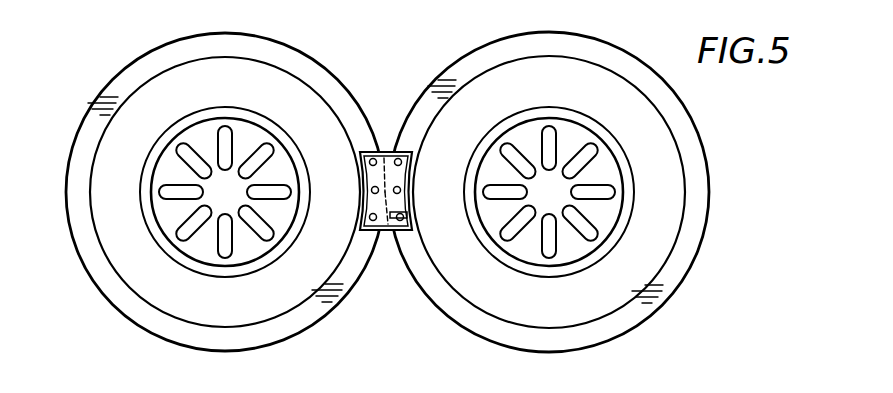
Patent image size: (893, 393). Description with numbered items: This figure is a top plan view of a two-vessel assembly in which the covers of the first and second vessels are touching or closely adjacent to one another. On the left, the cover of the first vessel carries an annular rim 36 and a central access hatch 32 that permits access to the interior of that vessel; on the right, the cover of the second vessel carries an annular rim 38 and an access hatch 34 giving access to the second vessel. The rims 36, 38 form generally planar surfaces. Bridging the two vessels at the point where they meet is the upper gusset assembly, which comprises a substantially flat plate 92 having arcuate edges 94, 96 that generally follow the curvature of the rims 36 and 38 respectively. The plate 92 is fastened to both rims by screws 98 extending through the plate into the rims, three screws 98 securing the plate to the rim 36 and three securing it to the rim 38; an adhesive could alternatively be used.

The access hatch 32 is at (172, 216).
The access hatch 34 is at (604, 167).
The annular rim 36 is at (141, 311).
The annular rim 38 is at (690, 224).
The plate 92 is at (391, 232).
The arcuate edge 94 is at (363, 192).
The arcuate edge 96 is at (410, 200).
The screws 98 is at (381, 150).